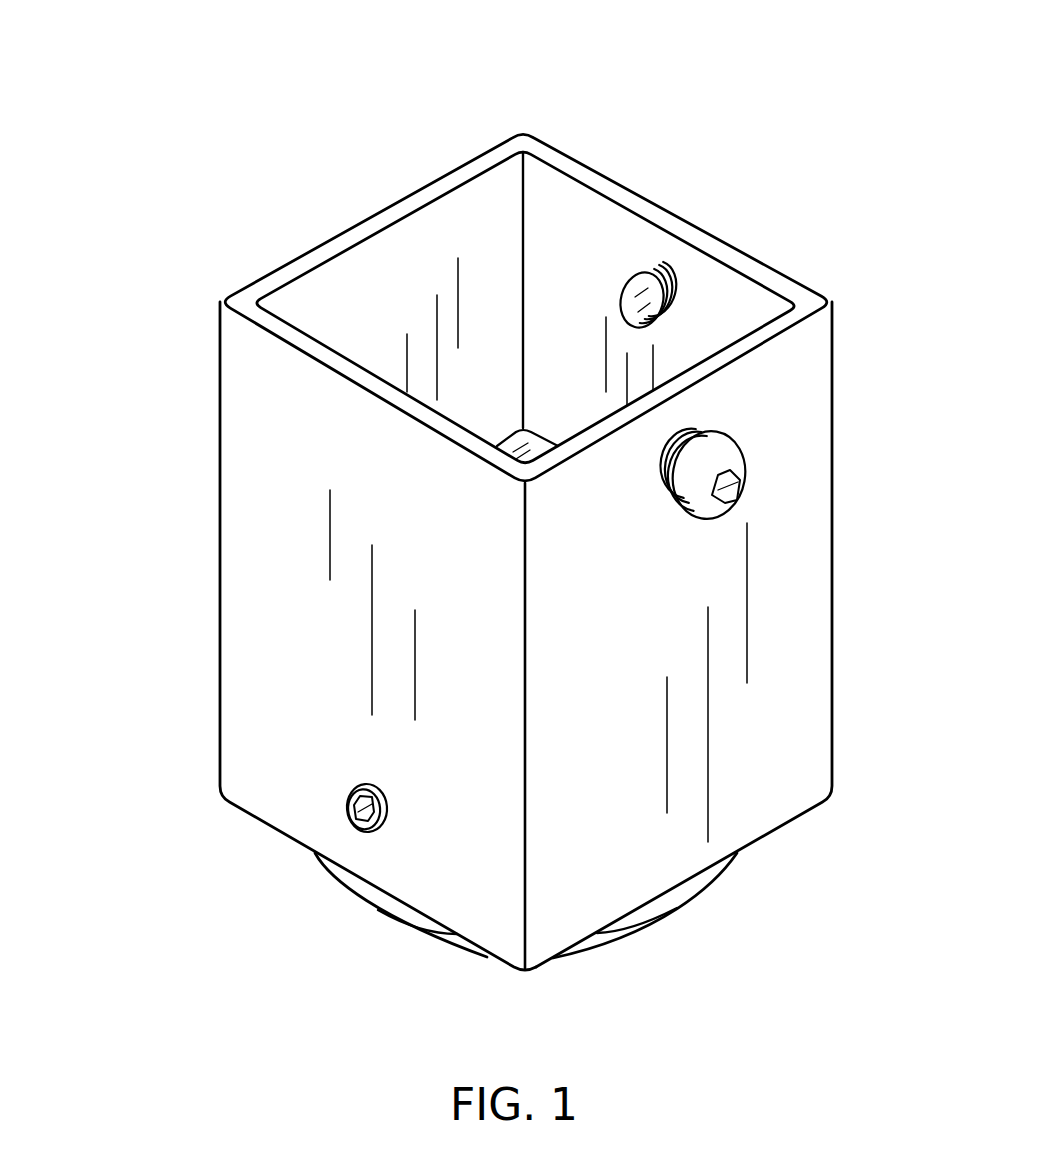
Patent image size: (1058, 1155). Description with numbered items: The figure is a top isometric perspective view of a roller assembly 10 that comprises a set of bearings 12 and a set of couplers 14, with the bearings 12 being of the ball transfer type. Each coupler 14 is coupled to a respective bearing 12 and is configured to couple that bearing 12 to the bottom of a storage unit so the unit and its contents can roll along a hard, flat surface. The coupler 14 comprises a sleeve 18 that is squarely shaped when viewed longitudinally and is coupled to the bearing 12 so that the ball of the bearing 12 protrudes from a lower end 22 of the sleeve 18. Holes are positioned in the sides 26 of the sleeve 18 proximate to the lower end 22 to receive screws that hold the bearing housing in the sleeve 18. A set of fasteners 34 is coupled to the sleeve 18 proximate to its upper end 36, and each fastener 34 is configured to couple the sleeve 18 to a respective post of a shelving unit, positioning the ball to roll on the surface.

The roller assembly 10 is at (212, 118).
The bearing 12 is at (618, 945).
The coupler 14 is at (838, 505).
The sleeve 18 is at (220, 496).
The lower end 22 is at (259, 820).
The side 26 is at (283, 625).
The fastener 34 is at (733, 453).
The upper end 36 is at (587, 168).